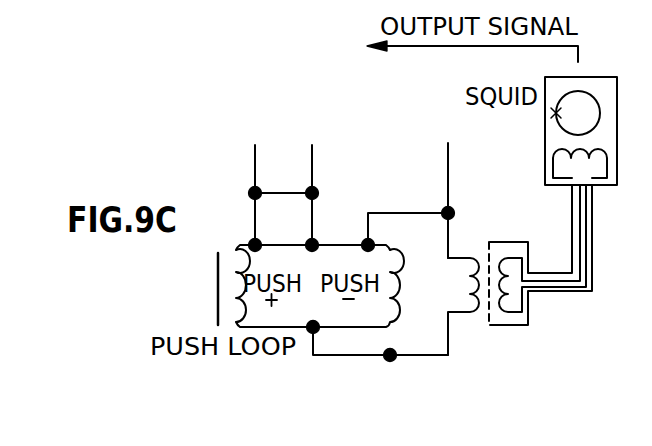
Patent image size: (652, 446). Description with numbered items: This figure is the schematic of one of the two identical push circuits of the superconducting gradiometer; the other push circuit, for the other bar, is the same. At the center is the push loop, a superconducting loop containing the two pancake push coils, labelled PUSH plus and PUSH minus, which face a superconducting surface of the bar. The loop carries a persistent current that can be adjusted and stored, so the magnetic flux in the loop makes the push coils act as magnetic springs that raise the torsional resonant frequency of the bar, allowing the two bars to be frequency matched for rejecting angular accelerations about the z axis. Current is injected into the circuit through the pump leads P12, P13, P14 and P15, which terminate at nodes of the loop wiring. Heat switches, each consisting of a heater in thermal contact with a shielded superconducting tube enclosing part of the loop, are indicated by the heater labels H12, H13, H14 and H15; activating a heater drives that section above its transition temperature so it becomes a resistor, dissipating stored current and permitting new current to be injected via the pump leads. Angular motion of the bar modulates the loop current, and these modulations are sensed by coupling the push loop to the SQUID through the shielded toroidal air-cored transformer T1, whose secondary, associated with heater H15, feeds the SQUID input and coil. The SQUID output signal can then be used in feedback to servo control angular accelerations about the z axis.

The pad / terminal P12 is at (255, 184).
The pad / terminal P13 is at (316, 184).
The pad / terminal P14 is at (441, 186).
The pad / terminal P15 is at (390, 355).
The heater H12 is at (291, 179).
The heater H13 is at (291, 233).
The heater H14 is at (429, 197).
The heater H15 is at (567, 304).
The transformer T1 is at (480, 318).